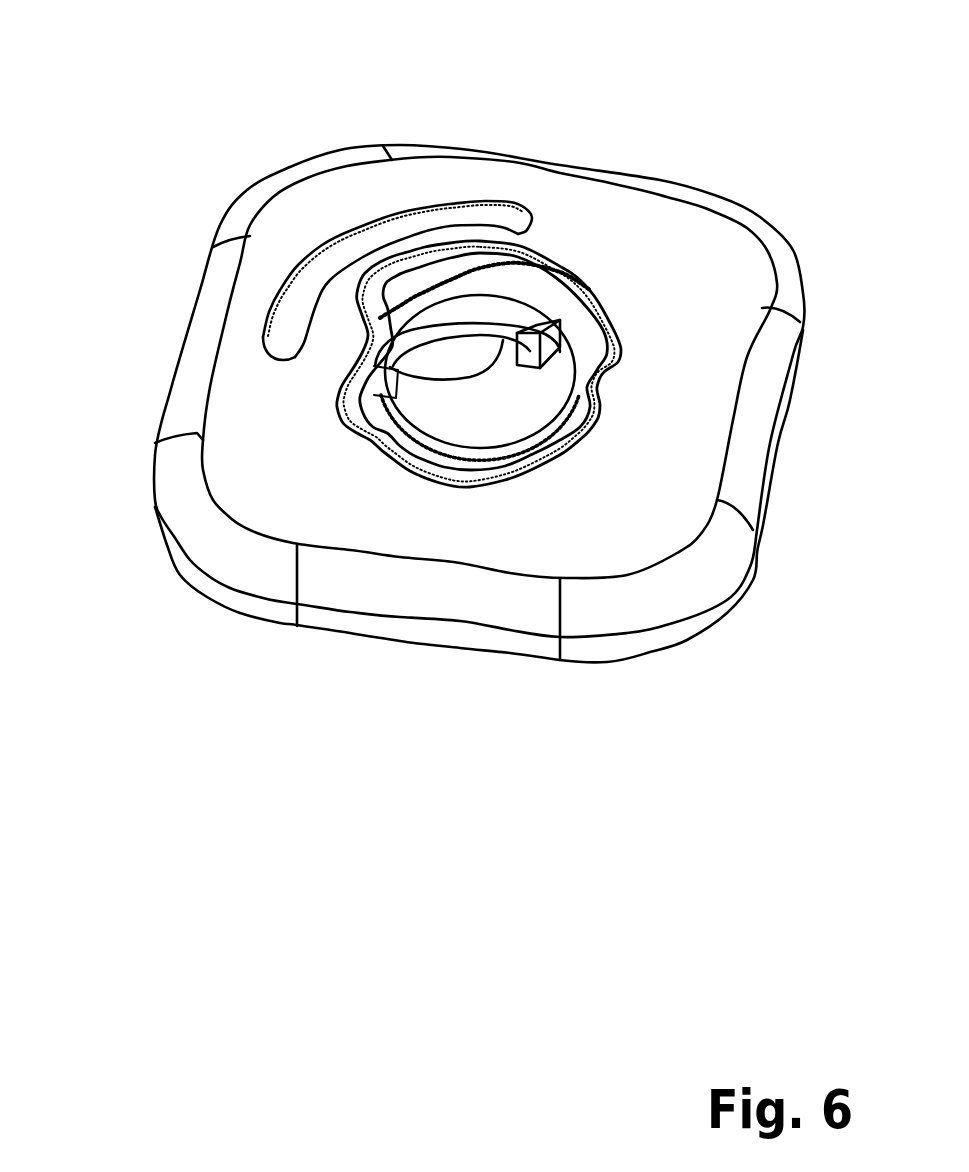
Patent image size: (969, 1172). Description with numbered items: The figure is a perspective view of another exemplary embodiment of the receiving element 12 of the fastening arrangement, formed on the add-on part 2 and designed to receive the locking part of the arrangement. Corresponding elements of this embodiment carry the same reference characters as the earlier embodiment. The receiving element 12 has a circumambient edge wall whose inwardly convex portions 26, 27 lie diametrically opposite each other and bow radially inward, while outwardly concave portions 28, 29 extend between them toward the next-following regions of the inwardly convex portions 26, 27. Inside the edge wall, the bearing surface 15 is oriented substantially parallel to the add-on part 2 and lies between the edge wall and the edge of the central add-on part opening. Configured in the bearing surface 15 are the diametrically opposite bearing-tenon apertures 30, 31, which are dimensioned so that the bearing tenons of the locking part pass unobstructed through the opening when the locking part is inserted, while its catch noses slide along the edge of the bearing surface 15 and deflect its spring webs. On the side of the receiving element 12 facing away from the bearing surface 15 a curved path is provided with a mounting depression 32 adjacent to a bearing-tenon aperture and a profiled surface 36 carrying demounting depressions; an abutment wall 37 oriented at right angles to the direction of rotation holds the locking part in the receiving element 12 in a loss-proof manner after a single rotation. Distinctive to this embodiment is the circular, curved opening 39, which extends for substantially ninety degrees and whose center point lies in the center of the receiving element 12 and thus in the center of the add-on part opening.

The add-on part 2 is at (662, 489).
The receiving element 12 is at (628, 358).
The bearing surface 15 is at (430, 318).
The inwardly convex portion 26 is at (543, 413).
The inwardly convex portion 27 is at (397, 437).
The outwardly concave portion 28 is at (515, 284).
The outwardly concave portion 29 is at (489, 443).
The bearing-tenon aperture 30 is at (547, 350).
The bearing-tenon aperture 31 is at (407, 431).
The mounting depression 32 is at (385, 368).
The profiled surface 36 is at (443, 355).
The abutment wall 37 is at (499, 340).
The circular, curved opening 39 is at (319, 289).